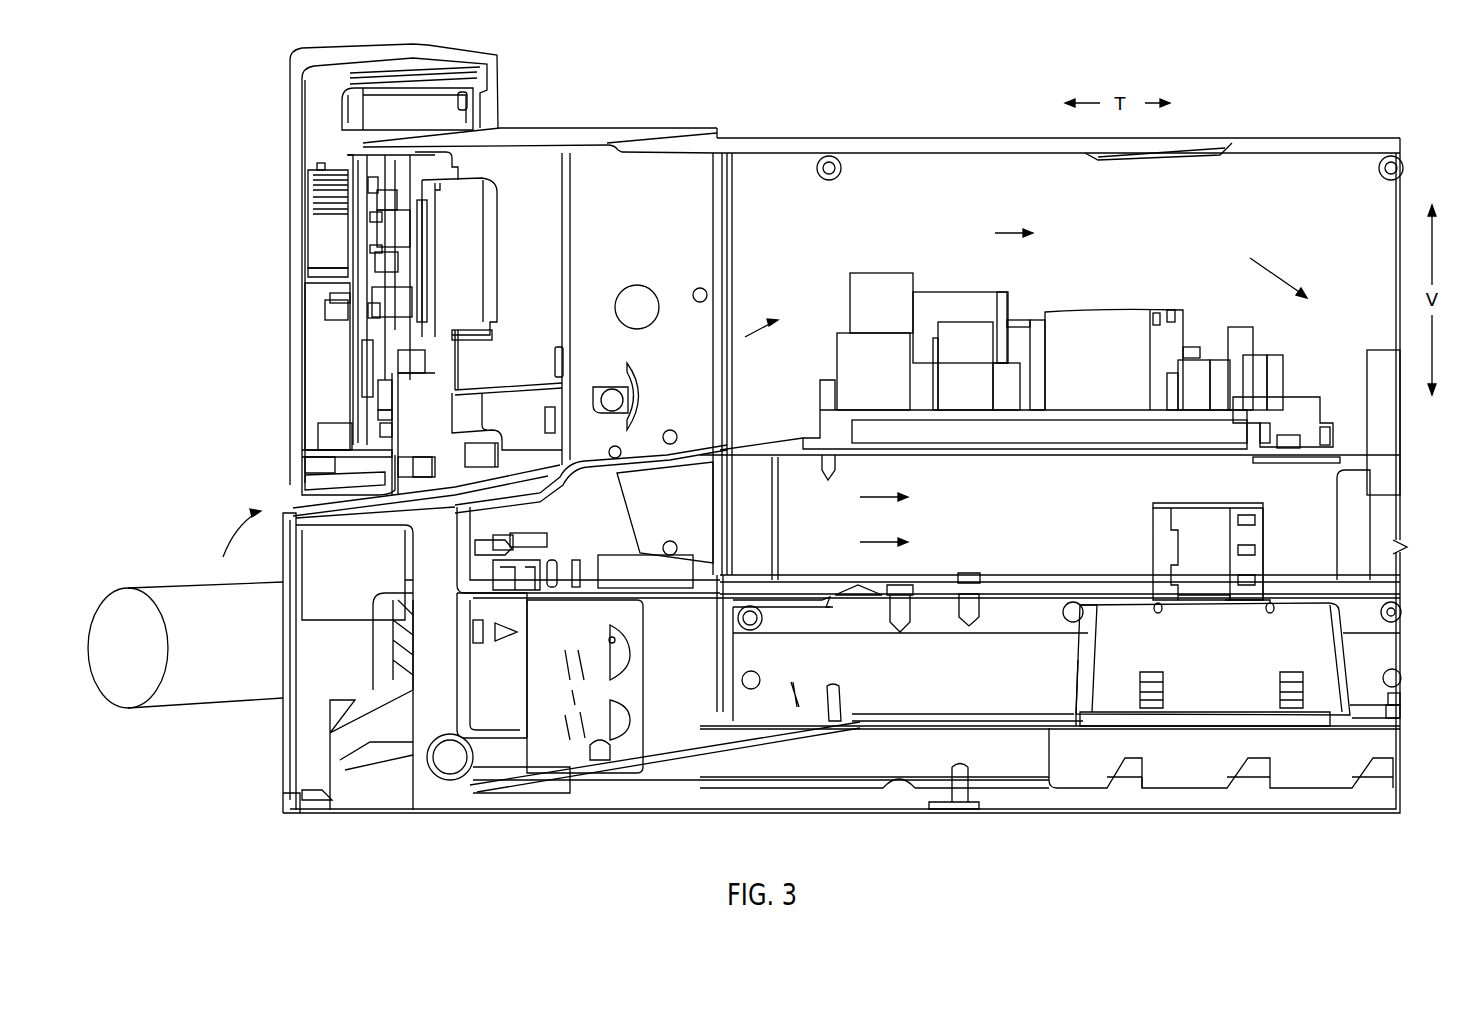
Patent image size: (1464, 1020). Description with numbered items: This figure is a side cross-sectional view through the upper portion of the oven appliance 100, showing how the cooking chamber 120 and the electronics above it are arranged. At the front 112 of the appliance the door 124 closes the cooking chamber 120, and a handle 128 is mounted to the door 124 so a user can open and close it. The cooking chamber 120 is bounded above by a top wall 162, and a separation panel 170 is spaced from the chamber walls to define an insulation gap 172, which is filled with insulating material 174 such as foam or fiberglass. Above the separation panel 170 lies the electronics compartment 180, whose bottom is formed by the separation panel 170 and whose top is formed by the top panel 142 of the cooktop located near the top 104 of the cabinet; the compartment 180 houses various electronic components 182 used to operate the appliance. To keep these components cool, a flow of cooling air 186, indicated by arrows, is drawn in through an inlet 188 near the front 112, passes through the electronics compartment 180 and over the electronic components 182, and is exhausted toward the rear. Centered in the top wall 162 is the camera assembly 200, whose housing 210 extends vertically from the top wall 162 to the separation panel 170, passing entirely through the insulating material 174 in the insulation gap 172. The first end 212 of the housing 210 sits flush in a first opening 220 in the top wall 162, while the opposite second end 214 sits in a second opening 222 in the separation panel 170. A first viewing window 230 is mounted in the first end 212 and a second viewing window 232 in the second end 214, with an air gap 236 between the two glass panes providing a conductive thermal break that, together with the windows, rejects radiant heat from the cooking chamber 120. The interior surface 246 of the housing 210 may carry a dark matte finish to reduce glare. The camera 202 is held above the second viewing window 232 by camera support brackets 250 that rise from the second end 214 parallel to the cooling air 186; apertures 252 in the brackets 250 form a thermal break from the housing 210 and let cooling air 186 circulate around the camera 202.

The oven appliance 100 is at (1307, 111).
The top 104 is at (626, 126).
The front 112 is at (279, 722).
The cooking chamber 120 is at (749, 805).
The door 124 is at (283, 800).
The handle 128 is at (120, 593).
The top panel 142 is at (792, 145).
The top wall 162 is at (868, 721).
The separation panel 170 is at (1327, 575).
The insulation gap 172 is at (708, 745).
The insulating material 174 is at (865, 669).
The electronics compartment 180 is at (1192, 210).
The electronic components 182 is at (1112, 381).
The flow of cooling air 186 is at (1293, 275).
The inlet 188 is at (323, 503).
The camera assembly 200 is at (1028, 544).
The camera 202 is at (1230, 553).
The housing 210 is at (1342, 665).
The first end 212 is at (1322, 730).
The second end 214 is at (1155, 618).
The first opening 220 is at (1087, 733).
The second opening 222 is at (1272, 574).
The first viewing window 230 is at (1220, 718).
The second viewing window 232 is at (1233, 605).
The air gap 236 is at (1233, 660).
The interior surface 246 is at (1083, 678).
The camera support brackets 250 is at (1160, 525).
The apertures 252 is at (1247, 549).